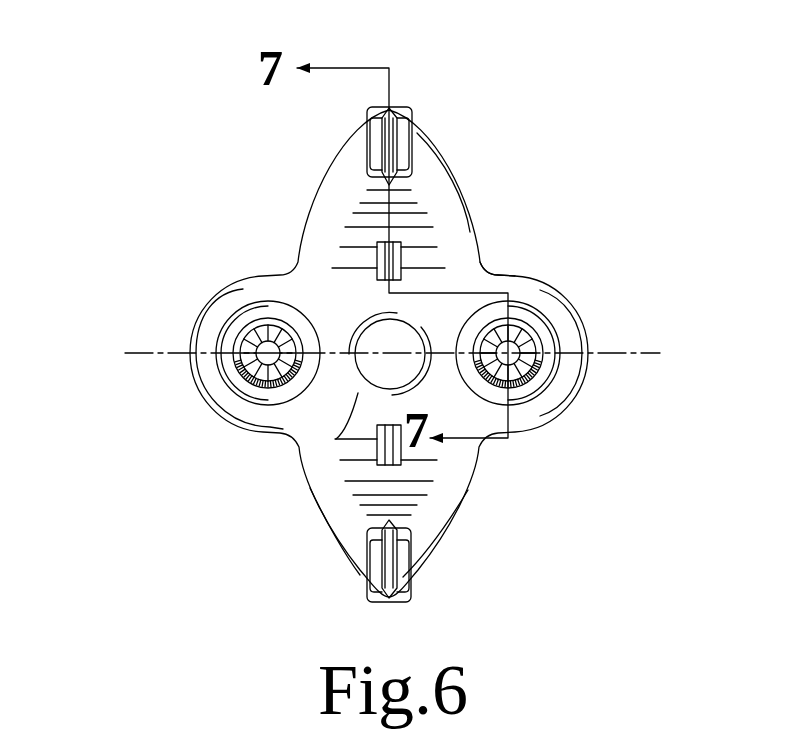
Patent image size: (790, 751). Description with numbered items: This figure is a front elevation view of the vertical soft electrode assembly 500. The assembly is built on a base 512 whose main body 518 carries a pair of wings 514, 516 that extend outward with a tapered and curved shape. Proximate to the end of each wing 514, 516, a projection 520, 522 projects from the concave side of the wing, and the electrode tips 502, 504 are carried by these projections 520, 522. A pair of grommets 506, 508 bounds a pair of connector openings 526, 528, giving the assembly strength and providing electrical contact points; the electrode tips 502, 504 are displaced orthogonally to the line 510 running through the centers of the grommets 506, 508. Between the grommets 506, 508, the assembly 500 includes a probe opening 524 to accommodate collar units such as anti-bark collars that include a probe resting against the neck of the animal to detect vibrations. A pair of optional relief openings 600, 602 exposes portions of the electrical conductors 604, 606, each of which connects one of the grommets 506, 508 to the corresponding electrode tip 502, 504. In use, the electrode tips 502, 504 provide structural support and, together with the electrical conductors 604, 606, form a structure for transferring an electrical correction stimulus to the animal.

The vertical soft electrode assembly 500 is at (110, 249).
The electrode tip 502 is at (368, 147).
The electrode tip 504 is at (405, 580).
The grommet 506 is at (243, 377).
The grommet 508 is at (540, 377).
The line 510 is at (631, 353).
The base 512 is at (463, 283).
The wing 514 is at (430, 177).
The wing 516 is at (427, 535).
The main body 518 is at (335, 440).
The projection 520 is at (408, 107).
The projection 522 is at (372, 592).
The probe opening 524 is at (372, 366).
The connector opening 526 is at (272, 328).
The connector opening 528 is at (527, 328).
The relief opening 600 is at (377, 256).
The relief opening 602 is at (341, 462).
The electrical conductor 604 is at (401, 262).
The electrical conductor 606 is at (403, 447).